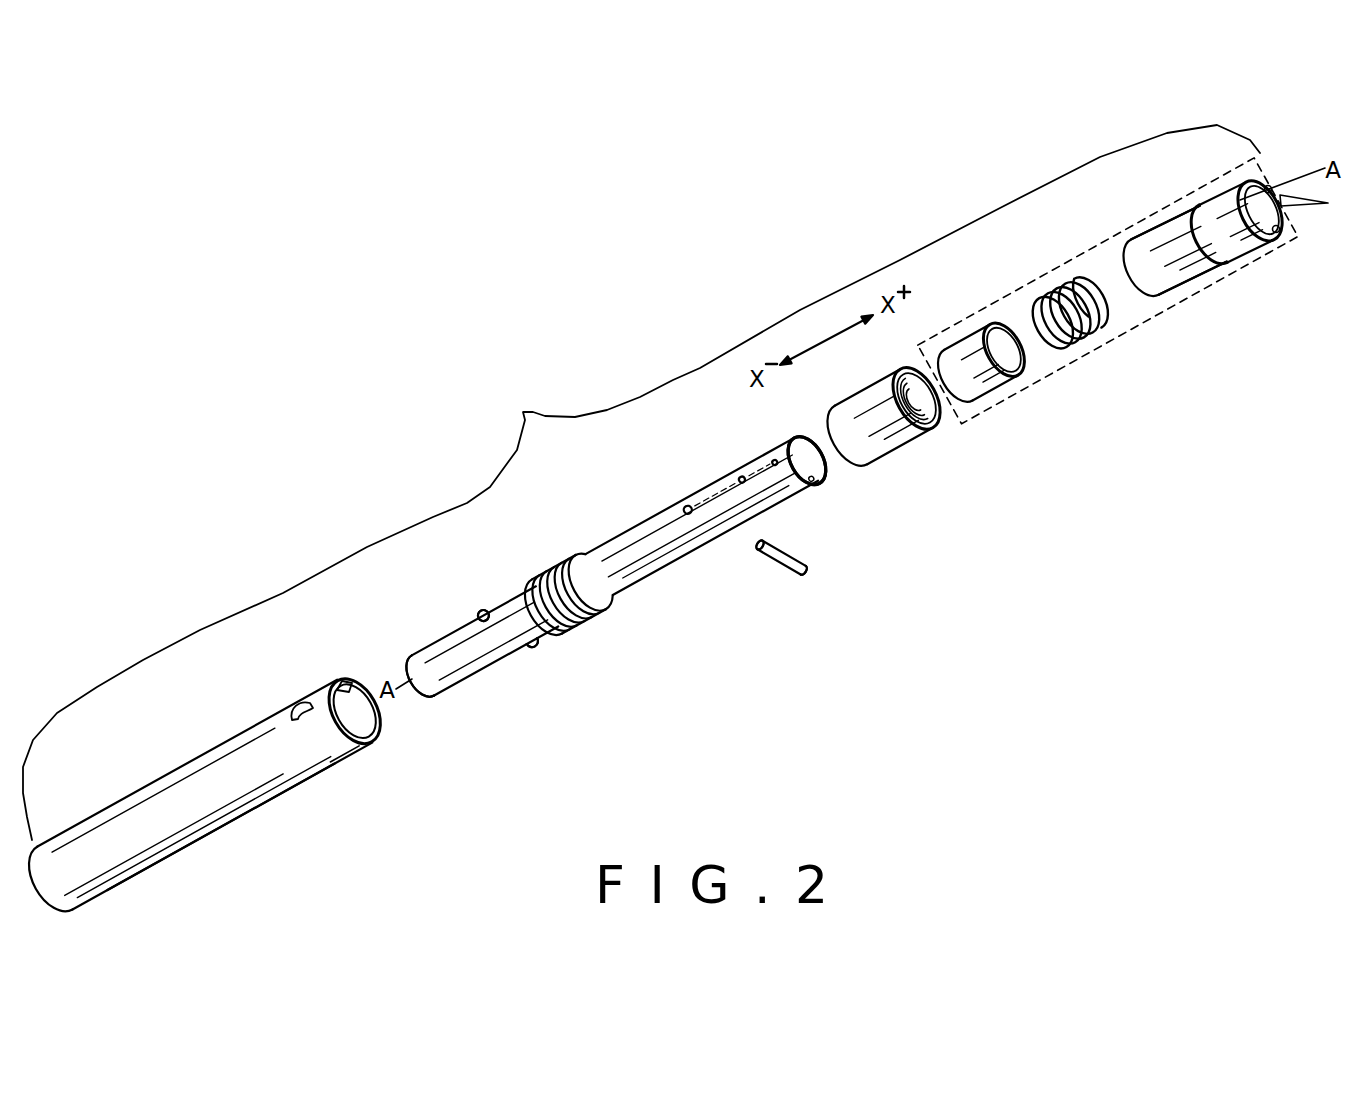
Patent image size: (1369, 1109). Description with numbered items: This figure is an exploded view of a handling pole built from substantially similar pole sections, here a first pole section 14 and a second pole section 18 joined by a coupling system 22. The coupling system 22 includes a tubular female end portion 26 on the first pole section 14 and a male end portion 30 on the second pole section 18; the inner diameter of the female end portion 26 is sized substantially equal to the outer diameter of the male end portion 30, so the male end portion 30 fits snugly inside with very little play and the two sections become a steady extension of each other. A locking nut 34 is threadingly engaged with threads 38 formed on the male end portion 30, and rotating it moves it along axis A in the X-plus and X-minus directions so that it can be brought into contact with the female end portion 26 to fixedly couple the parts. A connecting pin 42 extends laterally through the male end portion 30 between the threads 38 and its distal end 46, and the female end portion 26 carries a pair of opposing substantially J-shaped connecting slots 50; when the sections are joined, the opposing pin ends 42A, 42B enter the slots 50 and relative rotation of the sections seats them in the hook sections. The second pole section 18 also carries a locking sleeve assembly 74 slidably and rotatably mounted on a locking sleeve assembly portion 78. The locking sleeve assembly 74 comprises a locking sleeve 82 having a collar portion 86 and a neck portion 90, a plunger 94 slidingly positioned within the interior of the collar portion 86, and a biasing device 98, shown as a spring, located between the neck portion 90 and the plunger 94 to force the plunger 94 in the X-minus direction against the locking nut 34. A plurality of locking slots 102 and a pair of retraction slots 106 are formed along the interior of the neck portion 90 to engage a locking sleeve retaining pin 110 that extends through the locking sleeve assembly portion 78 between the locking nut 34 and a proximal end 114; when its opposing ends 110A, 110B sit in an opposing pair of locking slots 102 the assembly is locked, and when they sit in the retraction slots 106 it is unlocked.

The first pole section 14 is at (177, 872).
The second pole section 18 is at (1065, 412).
The coupling system 22 is at (641, 482).
The tubular female end portion 26 is at (217, 831).
The male end portion 30 is at (607, 620).
The locking nut 34 is at (890, 376).
The threads 38 is at (561, 566).
The connecting pin 42 is at (472, 595).
The connecting pin end 42A is at (483, 607).
The connecting pin end 42B is at (540, 649).
The distal end 46 is at (407, 655).
The J-shaped connecting slots 50 is at (336, 678).
The locking sleeve assembly 74 is at (1127, 338).
The locking sleeve assembly portion 78 is at (676, 484).
The locking sleeve 82 is at (1215, 283).
The collar portion 86 is at (1165, 222).
The neck portion 90 is at (1224, 200).
The plunger 94 is at (993, 401).
The biasing device 98 is at (1063, 284).
The locking slots 102 is at (1324, 205).
The retraction slots 106 is at (1272, 186).
The locking sleeve retaining pin 110 is at (778, 568).
The retaining pin end 110A is at (800, 567).
The retaining pin end 110B is at (757, 546).
The proximal end 114 is at (828, 472).